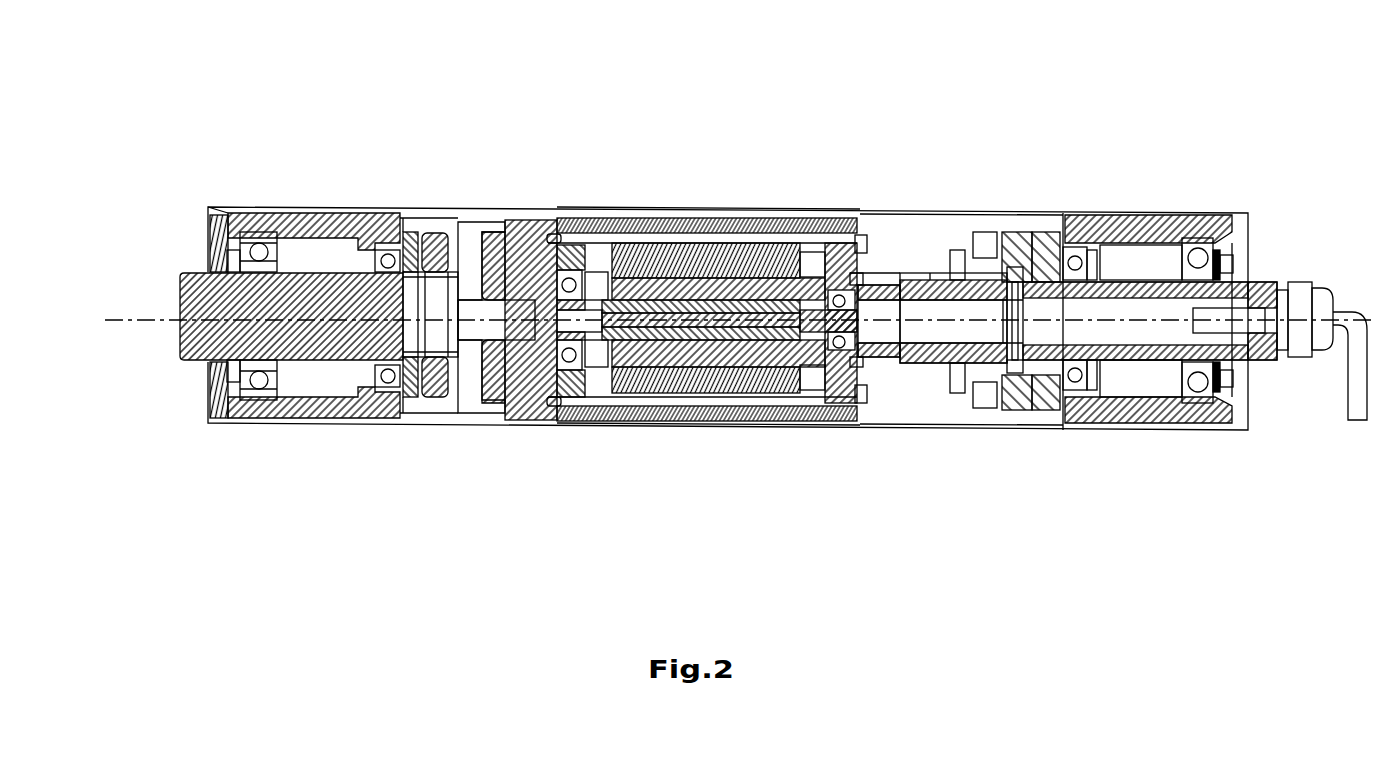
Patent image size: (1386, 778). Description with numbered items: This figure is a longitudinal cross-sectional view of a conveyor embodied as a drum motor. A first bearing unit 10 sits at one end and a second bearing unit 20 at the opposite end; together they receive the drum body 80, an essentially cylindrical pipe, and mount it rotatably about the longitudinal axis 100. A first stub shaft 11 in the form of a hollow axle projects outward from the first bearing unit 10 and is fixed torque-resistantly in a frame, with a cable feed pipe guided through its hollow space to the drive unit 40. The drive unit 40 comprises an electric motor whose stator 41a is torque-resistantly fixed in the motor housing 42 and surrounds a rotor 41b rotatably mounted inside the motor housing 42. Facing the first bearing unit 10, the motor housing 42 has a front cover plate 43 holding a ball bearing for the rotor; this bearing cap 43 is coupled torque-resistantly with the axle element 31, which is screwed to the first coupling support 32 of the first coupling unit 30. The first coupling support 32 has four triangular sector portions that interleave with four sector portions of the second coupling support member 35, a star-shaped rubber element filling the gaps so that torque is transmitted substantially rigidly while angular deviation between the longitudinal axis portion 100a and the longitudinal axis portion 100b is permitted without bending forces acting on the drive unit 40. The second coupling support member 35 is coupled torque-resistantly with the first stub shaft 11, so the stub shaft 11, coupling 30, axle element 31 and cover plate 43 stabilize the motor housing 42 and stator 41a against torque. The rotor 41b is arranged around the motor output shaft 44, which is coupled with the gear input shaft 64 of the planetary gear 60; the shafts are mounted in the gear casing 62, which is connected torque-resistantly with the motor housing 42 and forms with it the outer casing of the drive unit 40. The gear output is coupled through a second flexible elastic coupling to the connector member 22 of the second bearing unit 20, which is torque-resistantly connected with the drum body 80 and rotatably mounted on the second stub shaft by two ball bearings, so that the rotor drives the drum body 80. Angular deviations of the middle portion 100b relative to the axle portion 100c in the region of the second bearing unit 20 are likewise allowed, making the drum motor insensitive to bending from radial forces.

The first bearing unit 10 is at (1127, 181).
The first stub shaft 11 is at (1257, 365).
The second bearing unit 20 is at (283, 188).
The connector member 22 is at (370, 225).
The first coupling unit 30 is at (1010, 184).
The axle element 31 is at (905, 285).
The first coupling support 32 is at (987, 240).
The second coupling support member 35 is at (1040, 233).
The drive unit 40 is at (692, 130).
The stator 41a is at (670, 373).
The rotor 41b is at (780, 350).
The motor housing 42 is at (717, 400).
The front cover plate 43 is at (857, 375).
The motor output shaft 44 is at (647, 327).
The planetary gear 60 is at (436, 434).
The gear casing 62 is at (530, 225).
The gear input shaft 64 is at (463, 207).
The drum body 80 is at (546, 207).
The longitudinal axis 100 is at (127, 307).
The longitudinal axis portion 100a is at (1053, 323).
The longitudinal axis portion 100b is at (707, 300).
The axle portion 100c is at (360, 325).